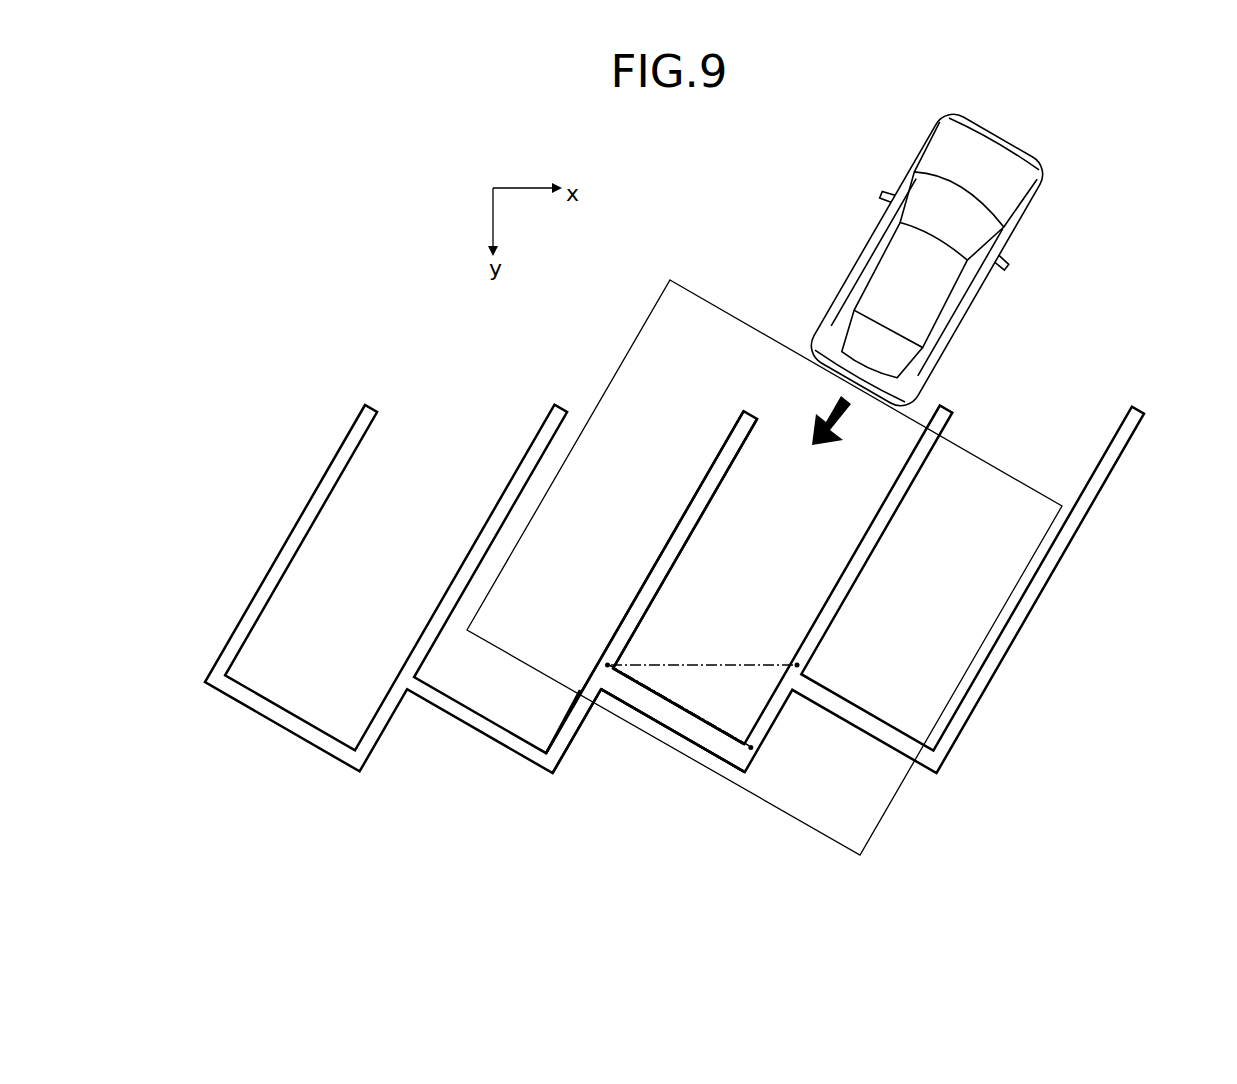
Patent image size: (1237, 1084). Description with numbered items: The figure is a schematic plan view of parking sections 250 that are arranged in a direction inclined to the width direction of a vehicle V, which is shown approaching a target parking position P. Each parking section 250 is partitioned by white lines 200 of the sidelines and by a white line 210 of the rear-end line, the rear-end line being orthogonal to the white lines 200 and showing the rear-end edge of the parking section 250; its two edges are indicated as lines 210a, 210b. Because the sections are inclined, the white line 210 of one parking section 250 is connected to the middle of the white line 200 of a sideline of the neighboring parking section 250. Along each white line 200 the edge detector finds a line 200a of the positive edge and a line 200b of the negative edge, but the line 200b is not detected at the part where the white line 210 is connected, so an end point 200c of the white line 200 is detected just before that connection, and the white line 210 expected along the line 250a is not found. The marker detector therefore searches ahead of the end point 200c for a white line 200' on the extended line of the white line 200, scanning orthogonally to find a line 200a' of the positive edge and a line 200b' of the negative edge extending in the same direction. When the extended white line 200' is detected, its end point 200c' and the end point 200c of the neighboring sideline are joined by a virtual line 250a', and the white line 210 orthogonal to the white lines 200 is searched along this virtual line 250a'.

The white line of sideline 200 is at (703, 562).
The line of positive edge 200a is at (645, 582).
The line of negative edge 200b is at (711, 543).
The end point of white line 200c is at (724, 732).
The extended white line 200' is at (800, 753).
The line of positive edge of extended white line 200a' is at (495, 783).
The line of negative edge of extended white line 200b' is at (548, 775).
The end point of extended white line 200c' is at (773, 779).
The white line of rear-end line 210 is at (707, 740).
The edge line of rear-end white line 210a is at (705, 718).
The edge line of rear-end white line 210b is at (727, 767).
The parking section 250 is at (448, 460).
The line 250a is at (576, 800).
The virtual line 250a' is at (619, 827).
The target parking position P is at (710, 297).
The vehicle V is at (1046, 166).